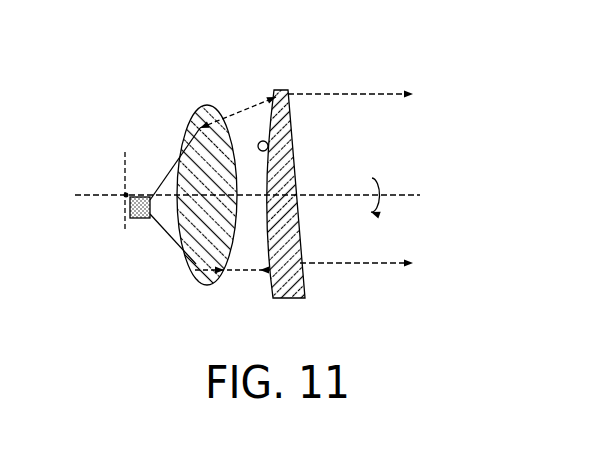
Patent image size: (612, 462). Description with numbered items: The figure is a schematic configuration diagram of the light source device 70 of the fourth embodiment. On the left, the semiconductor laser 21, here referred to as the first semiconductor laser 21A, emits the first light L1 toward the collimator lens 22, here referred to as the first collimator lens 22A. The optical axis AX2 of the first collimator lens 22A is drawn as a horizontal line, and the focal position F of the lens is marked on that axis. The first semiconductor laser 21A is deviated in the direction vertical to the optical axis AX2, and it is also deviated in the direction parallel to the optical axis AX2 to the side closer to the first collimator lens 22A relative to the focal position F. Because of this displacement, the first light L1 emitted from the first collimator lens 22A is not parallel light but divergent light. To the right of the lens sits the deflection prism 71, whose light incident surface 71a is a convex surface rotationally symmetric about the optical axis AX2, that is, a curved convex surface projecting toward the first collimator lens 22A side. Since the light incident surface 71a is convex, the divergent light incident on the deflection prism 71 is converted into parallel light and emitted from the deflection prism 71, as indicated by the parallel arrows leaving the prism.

The light source device 70 is at (213, 92).
The first light L1 is at (236, 112).
The focal position F is at (126, 195).
The first semiconductor laser 21A is at (145, 206).
The semiconductor laser 21 is at (140, 218).
The first collimator lens 22A is at (223, 218).
The collimator lens 22 is at (196, 277).
The deflection prism 71 is at (335, 208).
The light incident surface 71a is at (268, 144).
The optical axis AX2 is at (401, 195).